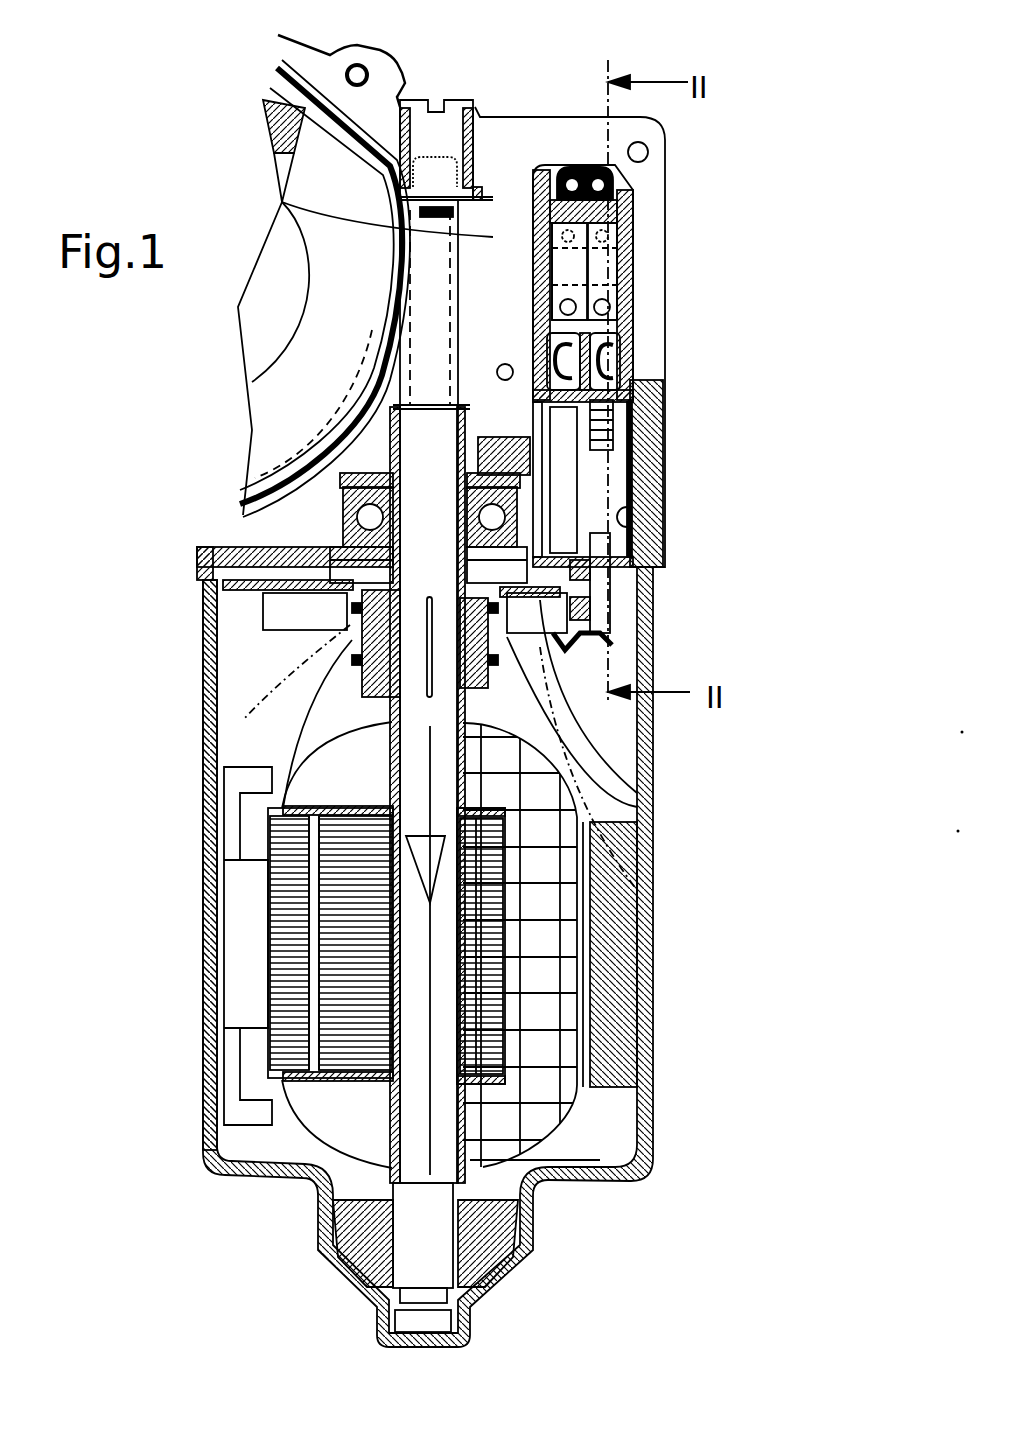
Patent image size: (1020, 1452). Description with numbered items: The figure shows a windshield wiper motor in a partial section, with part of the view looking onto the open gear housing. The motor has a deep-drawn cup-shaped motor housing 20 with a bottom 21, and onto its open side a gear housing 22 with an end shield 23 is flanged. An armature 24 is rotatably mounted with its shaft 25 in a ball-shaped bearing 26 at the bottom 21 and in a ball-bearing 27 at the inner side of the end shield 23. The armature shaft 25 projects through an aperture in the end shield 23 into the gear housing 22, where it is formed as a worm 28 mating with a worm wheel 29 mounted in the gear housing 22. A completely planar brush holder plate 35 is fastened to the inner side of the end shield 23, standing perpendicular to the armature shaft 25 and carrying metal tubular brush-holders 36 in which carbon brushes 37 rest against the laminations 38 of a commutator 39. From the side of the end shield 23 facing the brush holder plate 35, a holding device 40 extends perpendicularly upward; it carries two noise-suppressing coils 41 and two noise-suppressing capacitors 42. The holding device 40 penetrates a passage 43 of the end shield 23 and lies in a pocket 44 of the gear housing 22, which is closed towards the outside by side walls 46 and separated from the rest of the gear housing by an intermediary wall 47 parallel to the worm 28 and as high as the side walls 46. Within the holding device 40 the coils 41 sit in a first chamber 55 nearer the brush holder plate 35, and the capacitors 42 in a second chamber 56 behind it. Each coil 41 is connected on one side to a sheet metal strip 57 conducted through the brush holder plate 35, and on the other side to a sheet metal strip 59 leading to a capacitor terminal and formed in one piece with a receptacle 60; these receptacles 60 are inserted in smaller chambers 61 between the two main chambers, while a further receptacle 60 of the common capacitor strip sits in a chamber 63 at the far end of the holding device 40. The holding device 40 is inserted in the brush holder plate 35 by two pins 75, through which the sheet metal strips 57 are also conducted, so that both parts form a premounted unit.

The motor housing 20 is at (205, 912).
The bottom 21 is at (650, 1003).
The gear housing 22 is at (385, 75).
The end shield 23 is at (197, 553).
The armature 24 is at (545, 902).
The armature shaft 25 is at (487, 1140).
The ball-shaped bearing 26 is at (470, 1268).
The ball-bearing 27 is at (300, 465).
The worm 28 is at (435, 316).
The worm wheel 29 is at (264, 103).
The brush holder plate 35 is at (263, 613).
The tubular brush-holder 36 is at (243, 660).
The carbon brush 37 is at (227, 720).
The lamination 38 is at (268, 792).
The commutator 39 is at (337, 945).
The holding device 40 is at (633, 200).
The noise-suppressing coil 41 is at (570, 477).
The noise-suppressing capacitor 42 is at (570, 273).
The passage 43 is at (633, 507).
The pocket 44 is at (640, 307).
The side walls 46 is at (647, 337).
The intermediary wall 47 is at (282, 202).
The first chamber 55 is at (603, 460).
The second chamber 56 is at (637, 243).
The sheet metal strip 57 is at (603, 580).
The sheet metal strip 59 is at (640, 412).
The receptacle 60 is at (608, 163).
The chamber 61 is at (533, 370).
The chamber 63 is at (553, 133).
The pin 75 is at (587, 613).